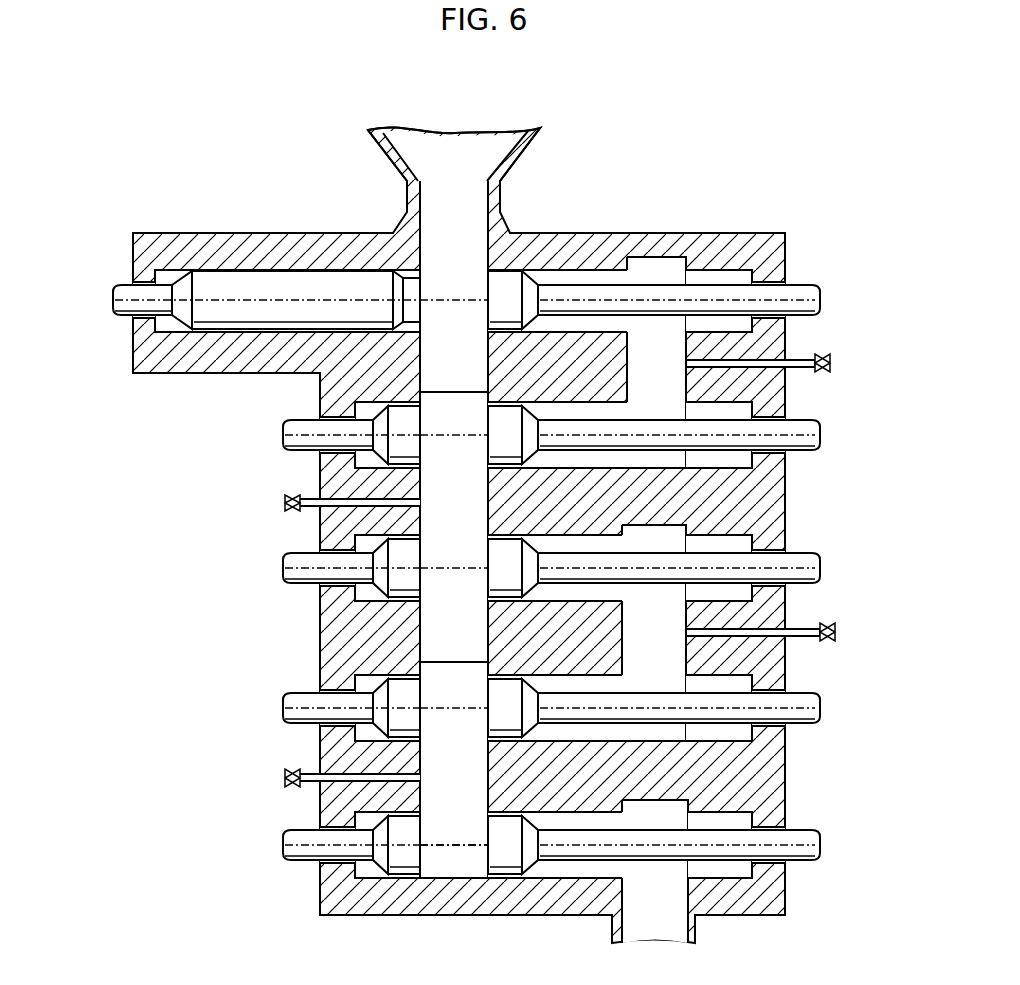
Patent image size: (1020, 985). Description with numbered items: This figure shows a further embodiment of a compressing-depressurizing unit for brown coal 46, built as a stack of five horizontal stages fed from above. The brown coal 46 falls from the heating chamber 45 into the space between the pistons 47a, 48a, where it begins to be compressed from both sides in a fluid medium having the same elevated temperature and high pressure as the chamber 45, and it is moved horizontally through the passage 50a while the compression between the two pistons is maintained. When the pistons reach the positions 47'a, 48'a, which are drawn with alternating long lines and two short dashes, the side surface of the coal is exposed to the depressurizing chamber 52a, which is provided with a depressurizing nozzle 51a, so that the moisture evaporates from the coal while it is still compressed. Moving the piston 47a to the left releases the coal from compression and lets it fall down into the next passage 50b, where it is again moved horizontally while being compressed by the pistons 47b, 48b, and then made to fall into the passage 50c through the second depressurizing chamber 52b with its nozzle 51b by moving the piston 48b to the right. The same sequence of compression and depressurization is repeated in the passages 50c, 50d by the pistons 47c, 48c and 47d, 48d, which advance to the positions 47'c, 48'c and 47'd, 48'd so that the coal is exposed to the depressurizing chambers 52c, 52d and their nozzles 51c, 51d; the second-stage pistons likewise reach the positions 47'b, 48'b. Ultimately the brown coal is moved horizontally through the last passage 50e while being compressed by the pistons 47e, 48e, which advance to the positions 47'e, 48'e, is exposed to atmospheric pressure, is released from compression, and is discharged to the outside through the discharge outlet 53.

The heating chamber 45 is at (517, 147).
The brown coal 46 is at (467, 282).
The piston 47a is at (230, 291).
The piston 47b is at (305, 422).
The piston 47c is at (302, 557).
The piston 47d is at (305, 686).
The piston 47e is at (297, 833).
The piston position 47'a is at (591, 256).
The piston position 47'b is at (513, 435).
The piston position 47'c is at (513, 568).
The piston position 47'd is at (513, 708).
The piston position 47'e is at (513, 845).
The piston 48a is at (808, 285).
The piston 48b is at (808, 420).
The piston 48c is at (808, 556).
The piston 48d is at (808, 721).
The piston 48e is at (808, 830).
The piston position 48'a is at (725, 261).
The piston position 48'b is at (719, 435).
The piston position 48'c is at (719, 568).
The piston position 48'd is at (719, 708).
The piston position 48'e is at (720, 845).
The passage 50a is at (579, 277).
The passage 50b is at (568, 410).
The passage 50c is at (583, 547).
The passage 50d is at (598, 680).
The passage 50e is at (588, 820).
The depressurizing nozzle 51a is at (818, 360).
The depressurizing nozzle 51b is at (300, 506).
The depressurizing nozzle 51c is at (805, 627).
The depressurizing nozzle 51d is at (296, 775).
The depressurizing chamber 52a is at (650, 366).
The second depressurizing chamber 52b is at (428, 475).
The depressurizing chamber 52c is at (670, 658).
The depressurizing chamber 52d is at (452, 865).
The discharge outlet 53 is at (692, 928).